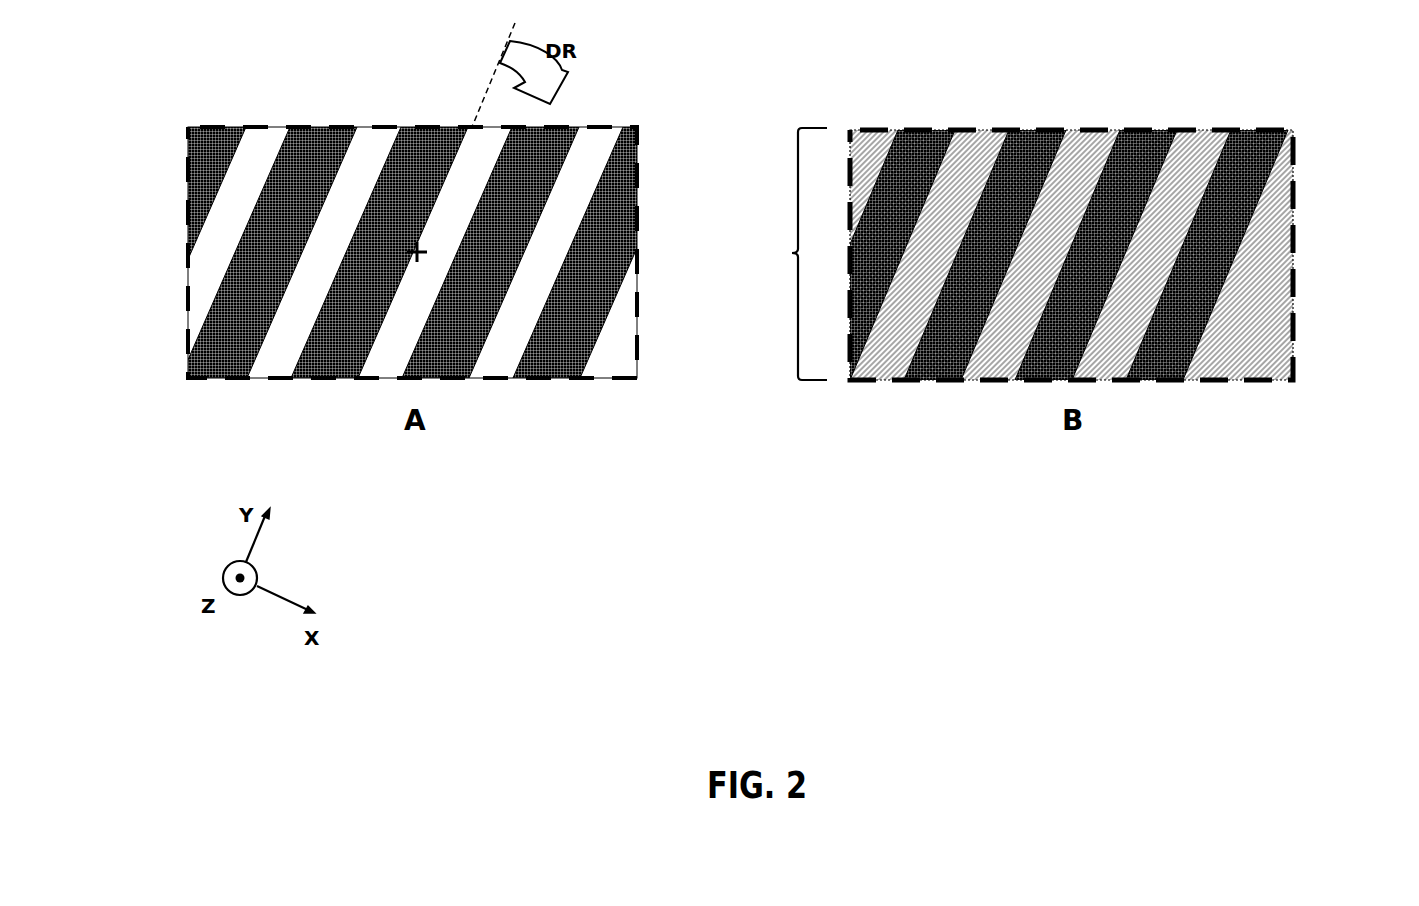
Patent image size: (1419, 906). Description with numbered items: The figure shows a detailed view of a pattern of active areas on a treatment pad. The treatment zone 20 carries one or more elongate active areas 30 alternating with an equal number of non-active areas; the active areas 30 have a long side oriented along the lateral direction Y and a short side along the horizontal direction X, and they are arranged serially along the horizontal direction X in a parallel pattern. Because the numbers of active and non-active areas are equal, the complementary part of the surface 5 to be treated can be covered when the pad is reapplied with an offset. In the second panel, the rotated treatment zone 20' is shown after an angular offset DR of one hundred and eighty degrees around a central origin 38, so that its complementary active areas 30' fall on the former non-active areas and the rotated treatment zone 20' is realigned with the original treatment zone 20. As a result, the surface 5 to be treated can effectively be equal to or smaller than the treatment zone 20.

The treatment zone 20 is at (481, 225).
The rotated treatment zone 20' is at (1060, 219).
The active areas 30 is at (722, 253).
The complementary active areas 30' is at (1116, 255).
The central origin 38 is at (410, 247).
The surface to be treated 5 is at (791, 253).